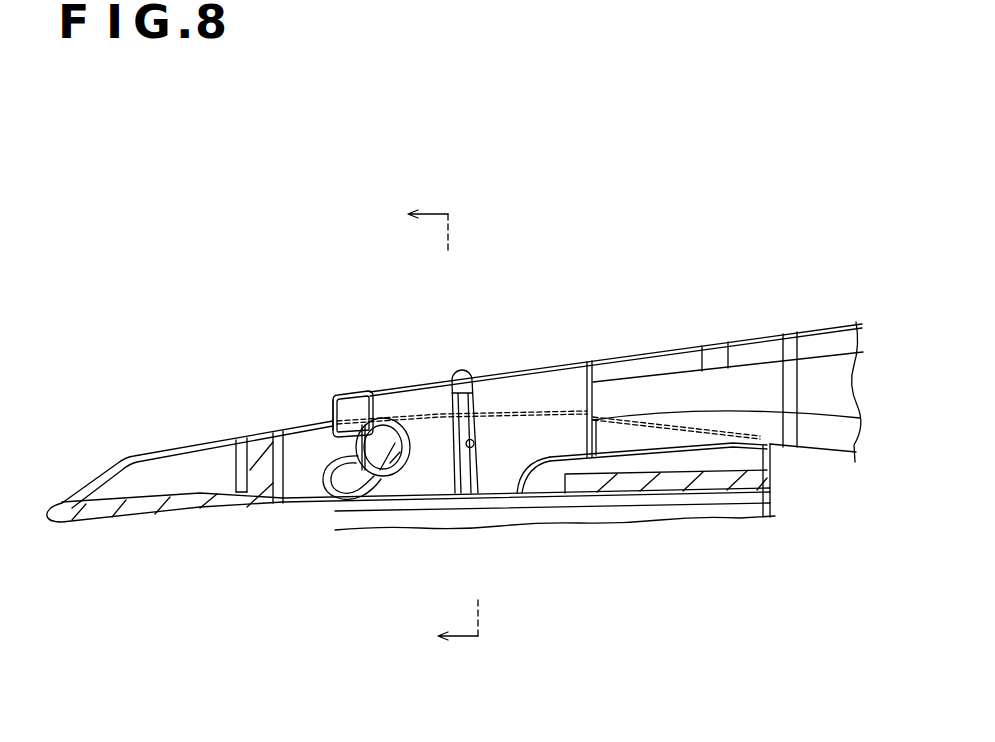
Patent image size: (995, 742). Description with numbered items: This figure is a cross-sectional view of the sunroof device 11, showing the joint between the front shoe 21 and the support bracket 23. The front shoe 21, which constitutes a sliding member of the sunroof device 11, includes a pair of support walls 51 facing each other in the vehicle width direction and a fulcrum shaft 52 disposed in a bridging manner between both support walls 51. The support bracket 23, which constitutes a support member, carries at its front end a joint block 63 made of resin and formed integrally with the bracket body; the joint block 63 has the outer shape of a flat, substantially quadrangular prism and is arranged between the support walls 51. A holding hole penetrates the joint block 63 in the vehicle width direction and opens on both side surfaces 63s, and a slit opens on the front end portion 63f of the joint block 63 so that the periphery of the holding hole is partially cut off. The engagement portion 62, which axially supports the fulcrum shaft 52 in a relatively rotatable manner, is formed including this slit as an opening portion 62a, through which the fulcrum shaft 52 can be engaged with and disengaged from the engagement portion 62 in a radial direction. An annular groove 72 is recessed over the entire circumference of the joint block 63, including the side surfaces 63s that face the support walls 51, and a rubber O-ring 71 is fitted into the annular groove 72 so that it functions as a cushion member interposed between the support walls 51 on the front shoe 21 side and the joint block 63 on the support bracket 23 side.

The sunroof device 11 is at (113, 178).
The front shoe 21 is at (148, 455).
The support bracket 23 is at (748, 333).
The support wall 51 is at (282, 431).
The fulcrum shaft 52 is at (340, 394).
The engagement portion 62 is at (372, 382).
The opening portion 62a is at (338, 505).
The joint block 63 is at (395, 388).
The front end portion of the joint block 63f is at (333, 418).
The side surface of the joint block 63s is at (423, 397).
The O-ring 71 is at (462, 372).
The annular groove 72 is at (474, 443).